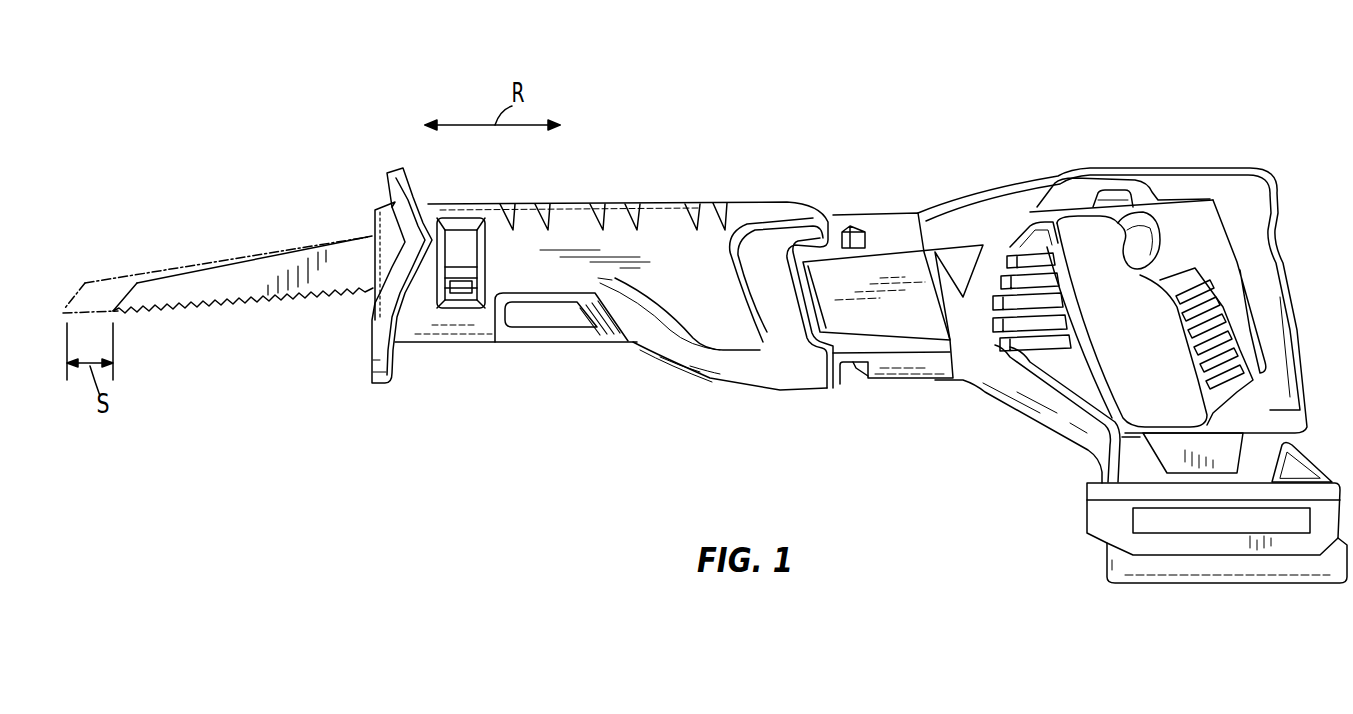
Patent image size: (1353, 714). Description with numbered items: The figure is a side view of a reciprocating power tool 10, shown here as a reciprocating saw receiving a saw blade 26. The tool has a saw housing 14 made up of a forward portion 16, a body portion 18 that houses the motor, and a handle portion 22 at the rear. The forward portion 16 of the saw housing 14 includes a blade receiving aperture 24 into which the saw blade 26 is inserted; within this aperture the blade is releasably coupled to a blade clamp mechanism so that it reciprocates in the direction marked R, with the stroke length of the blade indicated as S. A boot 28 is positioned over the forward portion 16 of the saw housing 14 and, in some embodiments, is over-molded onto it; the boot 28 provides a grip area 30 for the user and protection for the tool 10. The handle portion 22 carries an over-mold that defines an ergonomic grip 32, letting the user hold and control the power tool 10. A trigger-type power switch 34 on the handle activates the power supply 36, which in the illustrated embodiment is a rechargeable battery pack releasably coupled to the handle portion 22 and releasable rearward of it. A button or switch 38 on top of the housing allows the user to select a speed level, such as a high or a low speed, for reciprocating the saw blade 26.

The reciprocating power tool 10 is at (1032, 90).
The saw housing 14 is at (903, 386).
The forward portion 16 is at (507, 208).
The body portion 18 is at (882, 212).
The handle portion 22 is at (1152, 167).
The blade receiving aperture 24 is at (373, 222).
The saw blade 26 is at (140, 267).
The boot 28 is at (708, 381).
The grip area 30 is at (672, 282).
The ergonomic grip 32 is at (1207, 290).
The trigger-type power switch 34 is at (1117, 258).
The power supply 36 is at (1087, 520).
The speed selection switch 38 is at (1118, 200).